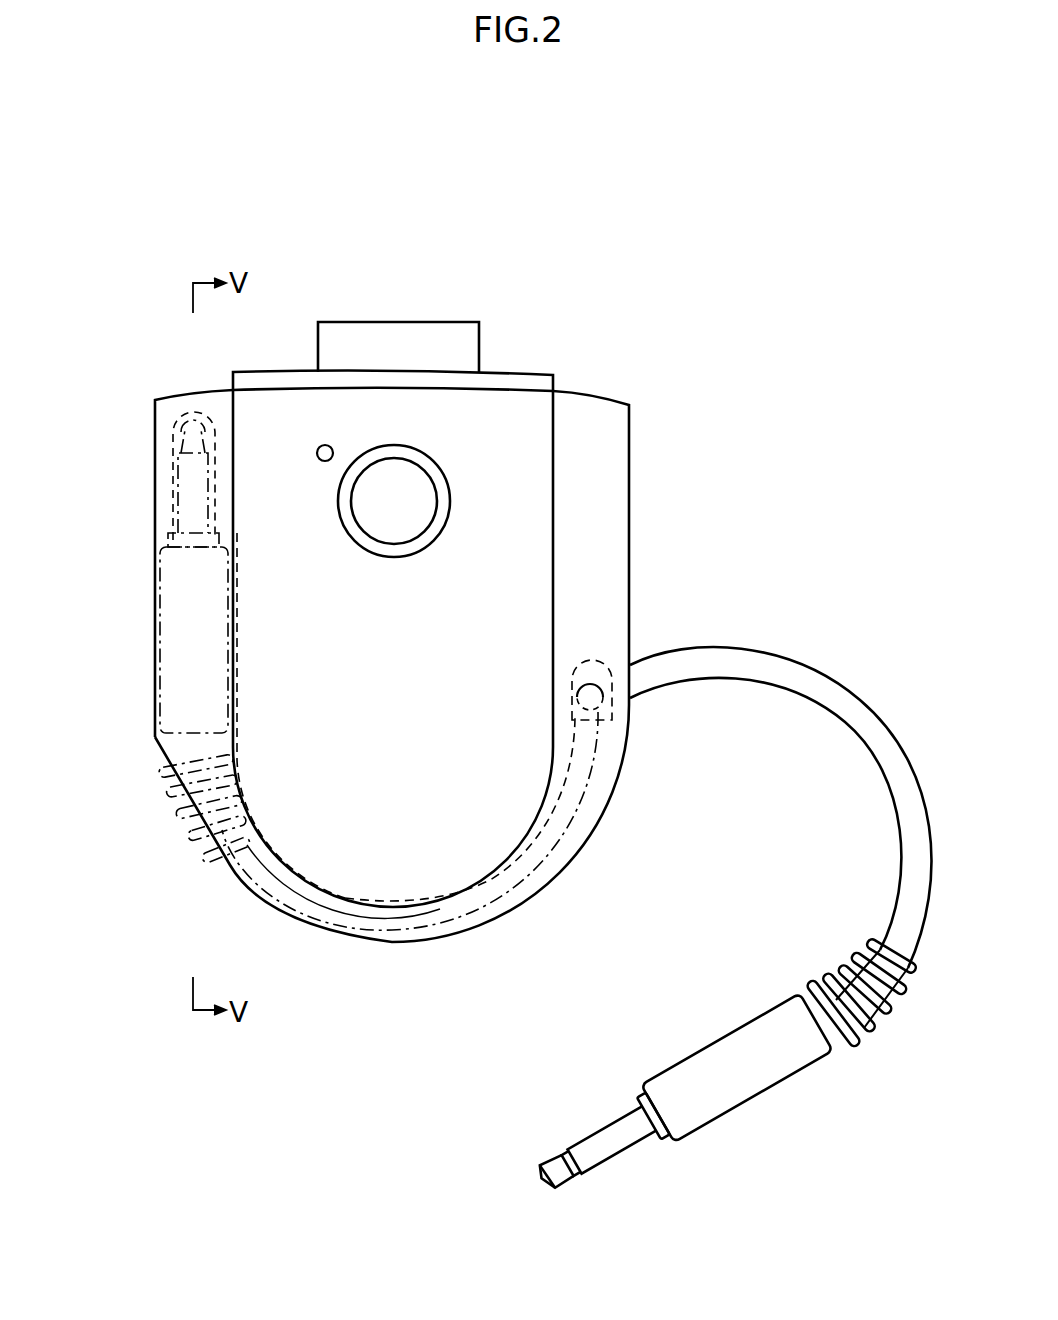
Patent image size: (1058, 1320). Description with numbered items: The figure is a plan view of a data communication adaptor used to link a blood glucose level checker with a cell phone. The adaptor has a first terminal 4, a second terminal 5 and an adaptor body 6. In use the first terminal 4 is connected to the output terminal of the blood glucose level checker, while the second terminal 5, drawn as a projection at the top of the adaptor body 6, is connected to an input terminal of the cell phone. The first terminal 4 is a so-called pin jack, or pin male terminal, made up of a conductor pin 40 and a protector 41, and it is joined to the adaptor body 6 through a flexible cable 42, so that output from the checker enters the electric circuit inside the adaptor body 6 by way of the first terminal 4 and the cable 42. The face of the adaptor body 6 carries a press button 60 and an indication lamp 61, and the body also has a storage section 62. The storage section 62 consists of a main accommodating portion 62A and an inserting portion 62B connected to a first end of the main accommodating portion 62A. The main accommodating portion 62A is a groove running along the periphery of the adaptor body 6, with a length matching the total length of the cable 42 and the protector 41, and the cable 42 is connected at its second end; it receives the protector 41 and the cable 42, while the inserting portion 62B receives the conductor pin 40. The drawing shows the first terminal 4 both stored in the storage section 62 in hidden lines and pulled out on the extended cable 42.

The first terminal 4 is at (501, 810).
The second terminal 5 is at (425, 340).
The adaptor body 6 is at (604, 508).
The conductor pin 40 is at (178, 505).
The protector 41 is at (157, 655).
The flexible cable 42 is at (862, 728).
The press button 60 is at (418, 482).
The indication lamp 61 is at (319, 446).
The storage section 62 is at (300, 902).
The main accommodating portion 62A is at (471, 908).
The inserting portion 62B is at (172, 460).